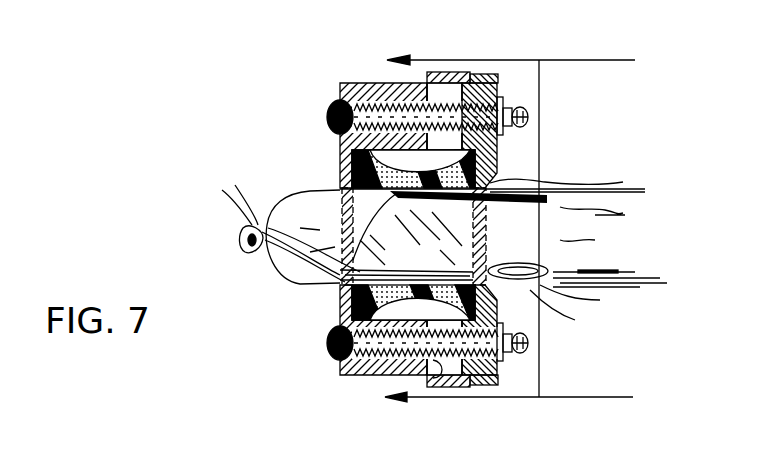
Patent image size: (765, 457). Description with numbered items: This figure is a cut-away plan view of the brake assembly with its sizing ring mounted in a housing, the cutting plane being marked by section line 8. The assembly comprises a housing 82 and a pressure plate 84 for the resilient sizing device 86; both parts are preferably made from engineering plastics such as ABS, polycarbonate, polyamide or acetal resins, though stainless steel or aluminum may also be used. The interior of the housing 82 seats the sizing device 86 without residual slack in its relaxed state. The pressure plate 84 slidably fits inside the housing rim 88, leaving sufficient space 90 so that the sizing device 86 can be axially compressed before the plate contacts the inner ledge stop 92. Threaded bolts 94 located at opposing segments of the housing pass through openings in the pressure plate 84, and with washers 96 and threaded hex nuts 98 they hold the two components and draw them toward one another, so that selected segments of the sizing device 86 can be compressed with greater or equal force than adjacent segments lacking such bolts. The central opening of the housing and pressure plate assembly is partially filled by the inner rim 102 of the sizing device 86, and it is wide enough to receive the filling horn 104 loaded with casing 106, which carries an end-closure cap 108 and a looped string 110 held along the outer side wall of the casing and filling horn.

The section line 8- 8 is at (524, 223).
The housing 82 is at (360, 83).
The pressure plate 84 is at (497, 310).
The sizing device 86 is at (357, 313).
The housing rim 88 is at (463, 388).
The space 90 is at (447, 381).
The inner ledge stop 92 is at (433, 380).
The threaded bolts 94 is at (335, 120).
The washers 96 is at (500, 100).
The threaded hex nuts 98 is at (515, 100).
The inner rim 102 is at (310, 252).
The filling horn 104 is at (637, 185).
The casing 106 is at (553, 183).
The end-closure cap 108 is at (243, 236).
The looped string 110 is at (547, 290).